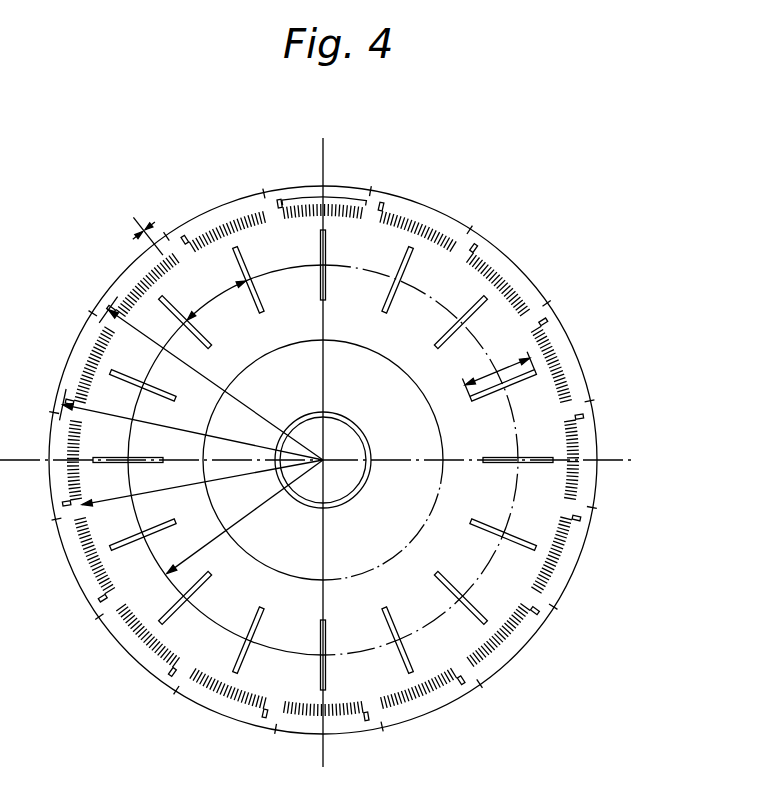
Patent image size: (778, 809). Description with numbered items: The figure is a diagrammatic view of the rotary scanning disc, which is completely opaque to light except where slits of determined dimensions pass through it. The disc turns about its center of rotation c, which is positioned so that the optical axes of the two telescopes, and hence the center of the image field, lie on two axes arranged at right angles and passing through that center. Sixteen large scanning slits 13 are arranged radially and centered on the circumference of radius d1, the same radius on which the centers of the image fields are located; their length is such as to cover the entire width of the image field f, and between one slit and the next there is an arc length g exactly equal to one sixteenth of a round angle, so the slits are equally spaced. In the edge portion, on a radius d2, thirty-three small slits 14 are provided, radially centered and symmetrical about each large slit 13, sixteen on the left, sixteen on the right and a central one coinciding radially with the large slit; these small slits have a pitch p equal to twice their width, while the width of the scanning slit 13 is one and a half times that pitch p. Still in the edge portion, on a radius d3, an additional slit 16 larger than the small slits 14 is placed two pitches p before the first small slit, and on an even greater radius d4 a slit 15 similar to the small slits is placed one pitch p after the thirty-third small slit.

The scanning slit 13 is at (245, 261).
The small slit 14 is at (327, 201).
The slit 15 is at (372, 190).
The additional slit 16 is at (389, 201).
The center of rotation of the rotary disc c is at (323, 460).
The pitch p is at (147, 224).
The arc length g is at (216, 296).
The image field width f is at (498, 372).
The radius of the slit circumference d1 is at (245, 516).
The radius of the small slits d2 is at (202, 483).
The radius of the additional slit d3 is at (192, 424).
The radius of the slit 15 d4 is at (211, 378).